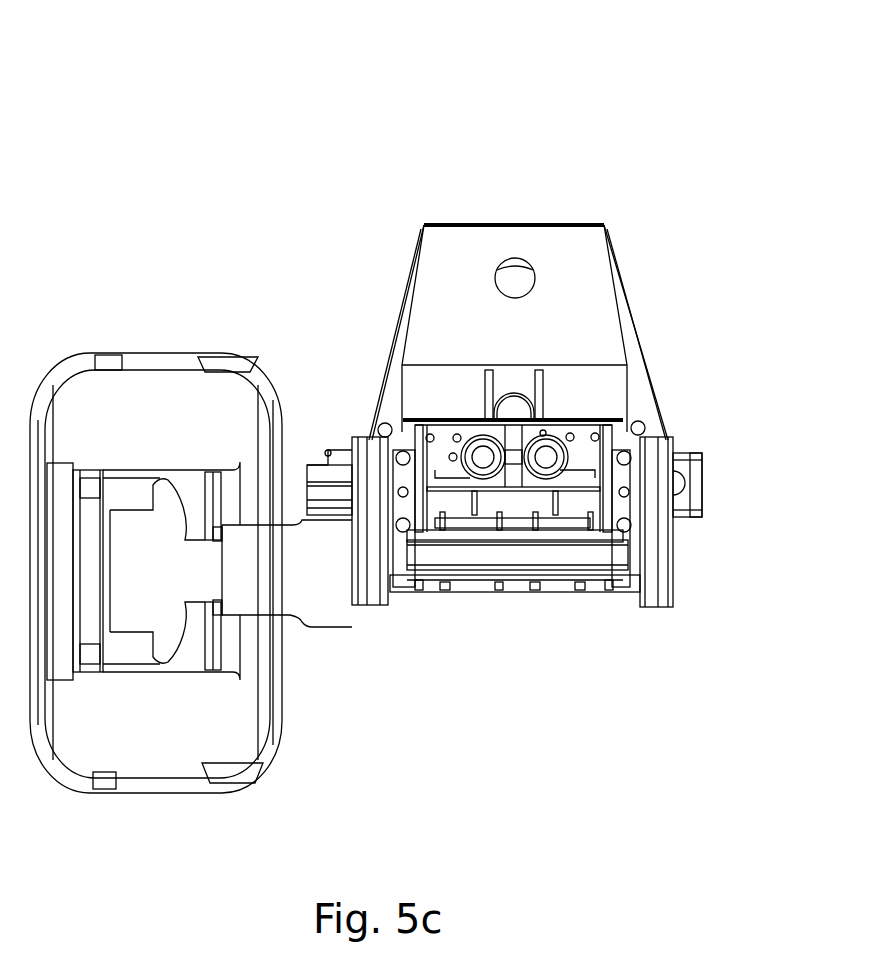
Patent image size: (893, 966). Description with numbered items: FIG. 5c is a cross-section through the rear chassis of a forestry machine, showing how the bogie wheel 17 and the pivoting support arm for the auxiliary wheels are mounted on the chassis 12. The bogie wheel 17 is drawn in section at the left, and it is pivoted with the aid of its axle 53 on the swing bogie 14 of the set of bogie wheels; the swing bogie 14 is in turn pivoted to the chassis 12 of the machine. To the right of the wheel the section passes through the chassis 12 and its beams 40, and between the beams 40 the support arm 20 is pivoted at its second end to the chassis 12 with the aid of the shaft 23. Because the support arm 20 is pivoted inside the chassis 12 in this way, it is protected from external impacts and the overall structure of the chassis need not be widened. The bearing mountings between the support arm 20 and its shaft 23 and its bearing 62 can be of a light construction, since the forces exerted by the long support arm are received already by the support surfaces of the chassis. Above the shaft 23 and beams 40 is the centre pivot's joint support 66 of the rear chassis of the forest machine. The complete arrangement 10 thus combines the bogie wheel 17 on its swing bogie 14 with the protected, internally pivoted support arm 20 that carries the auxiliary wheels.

The drive unit assembly 10 is at (648, 245).
The chassis 12 is at (712, 487).
The swing bogie 14 is at (323, 440).
The bogie wheel 17 is at (150, 790).
The support arm 20 is at (500, 592).
The shaft 23 is at (608, 555).
The beams 40 is at (372, 440).
The axle 53 is at (312, 593).
The bearing 62 is at (545, 575).
The centre pivot joint support 66 is at (463, 287).